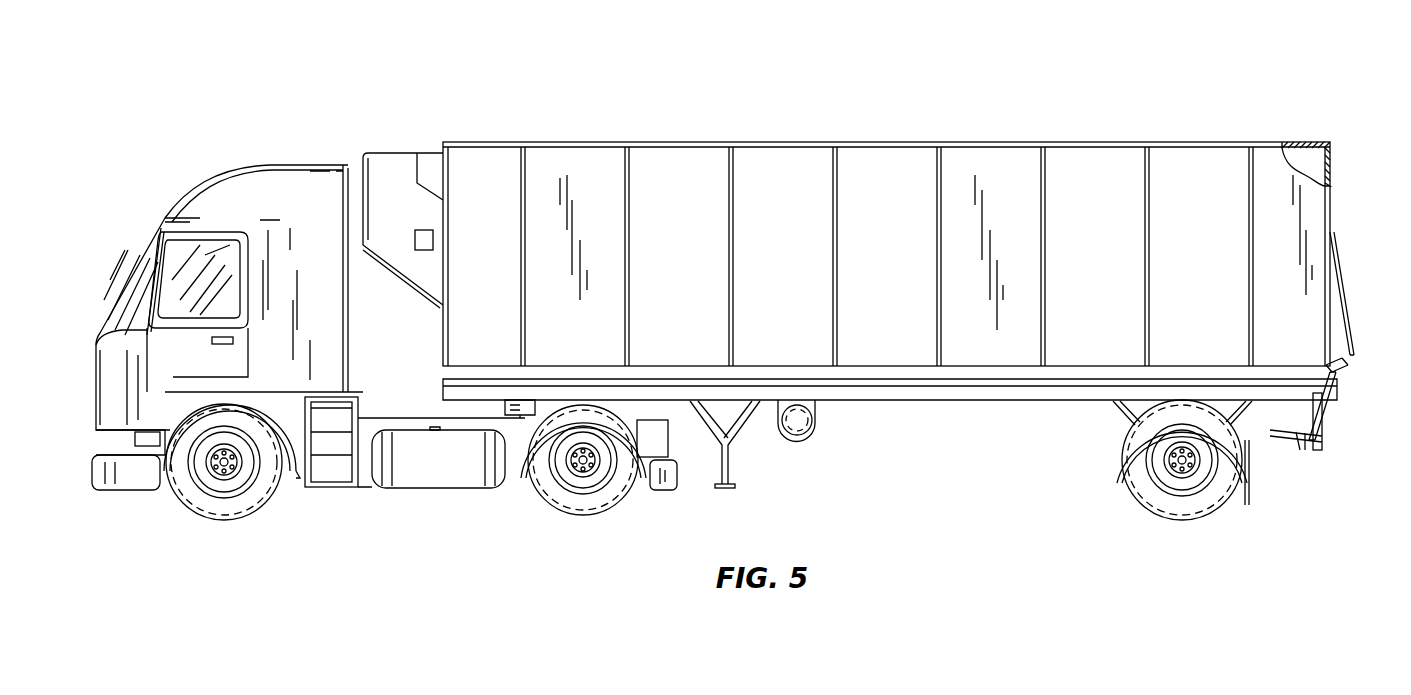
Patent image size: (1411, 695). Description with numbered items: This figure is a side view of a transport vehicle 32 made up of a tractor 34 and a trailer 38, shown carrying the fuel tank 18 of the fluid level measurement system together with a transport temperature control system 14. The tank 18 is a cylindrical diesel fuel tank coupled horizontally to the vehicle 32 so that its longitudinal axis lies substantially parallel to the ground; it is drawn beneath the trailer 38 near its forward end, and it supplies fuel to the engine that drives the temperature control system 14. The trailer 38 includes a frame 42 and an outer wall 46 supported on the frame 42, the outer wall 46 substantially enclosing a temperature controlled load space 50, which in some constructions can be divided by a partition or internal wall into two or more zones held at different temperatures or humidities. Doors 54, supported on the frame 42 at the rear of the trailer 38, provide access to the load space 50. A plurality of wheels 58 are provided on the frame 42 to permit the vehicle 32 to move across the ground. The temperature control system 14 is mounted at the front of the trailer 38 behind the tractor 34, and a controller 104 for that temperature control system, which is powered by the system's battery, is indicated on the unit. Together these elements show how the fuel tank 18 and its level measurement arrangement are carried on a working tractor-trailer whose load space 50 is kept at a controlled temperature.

The transport vehicle 32 is at (245, 96).
The tractor 34 is at (221, 200).
The transport temperature control system 14 is at (431, 152).
The controller 104 is at (420, 240).
The outer wall 46 is at (771, 170).
The trailer 38 is at (1084, 140).
The temperature controlled load space 50 is at (1310, 158).
The doors 54 is at (1351, 332).
The frame 42 is at (925, 402).
The fluid tank 18 is at (798, 427).
The wheels 58 is at (1145, 482).